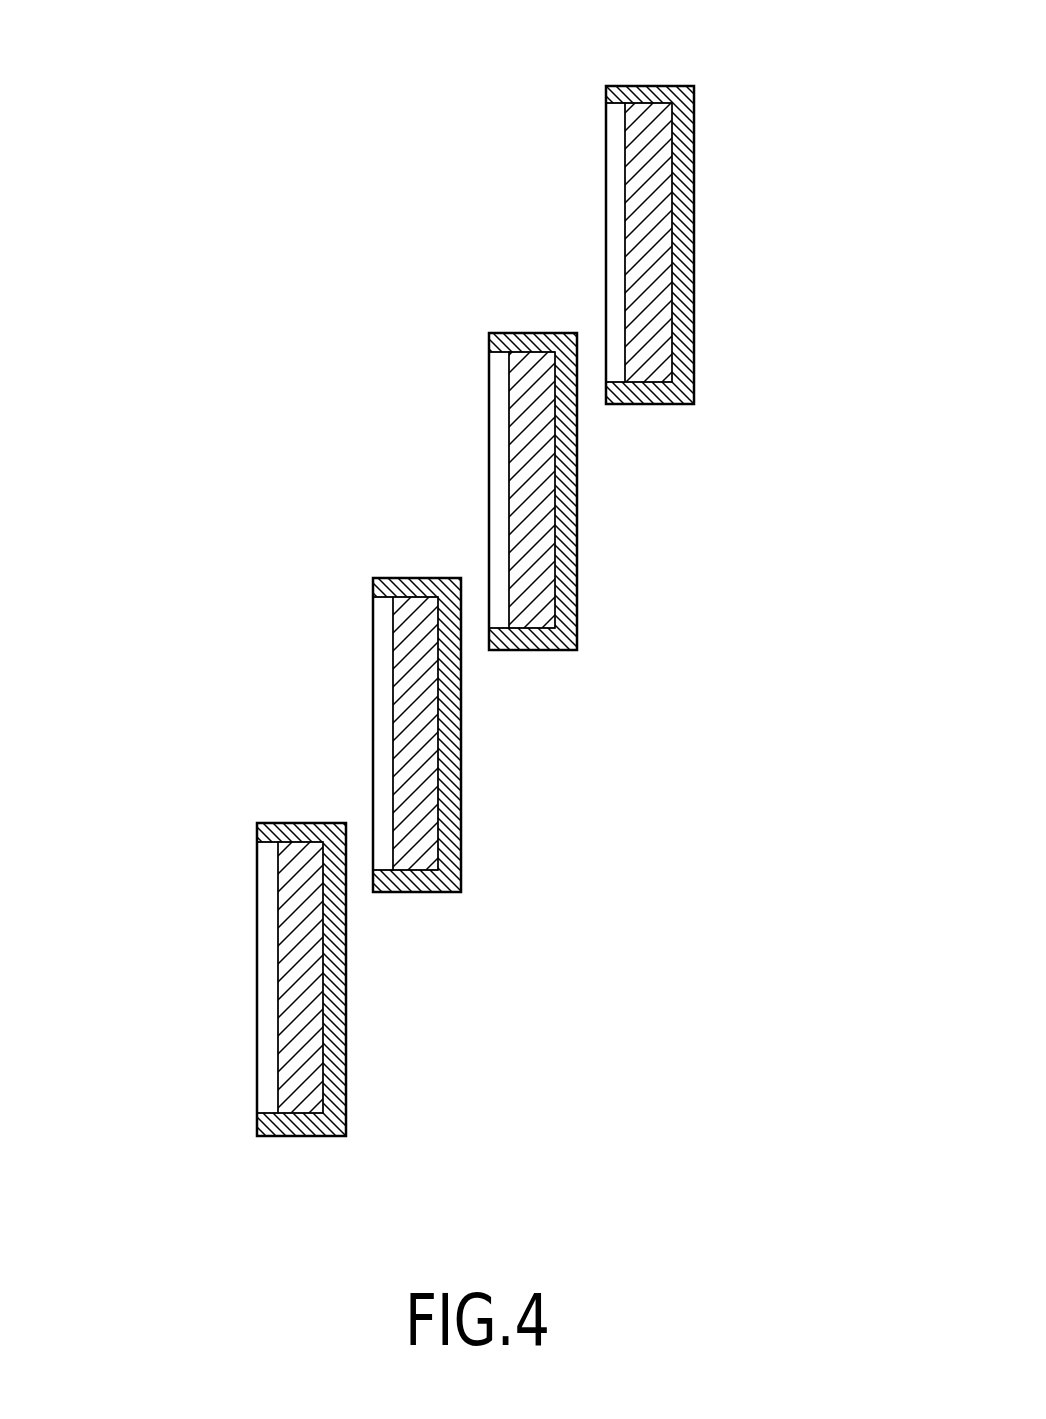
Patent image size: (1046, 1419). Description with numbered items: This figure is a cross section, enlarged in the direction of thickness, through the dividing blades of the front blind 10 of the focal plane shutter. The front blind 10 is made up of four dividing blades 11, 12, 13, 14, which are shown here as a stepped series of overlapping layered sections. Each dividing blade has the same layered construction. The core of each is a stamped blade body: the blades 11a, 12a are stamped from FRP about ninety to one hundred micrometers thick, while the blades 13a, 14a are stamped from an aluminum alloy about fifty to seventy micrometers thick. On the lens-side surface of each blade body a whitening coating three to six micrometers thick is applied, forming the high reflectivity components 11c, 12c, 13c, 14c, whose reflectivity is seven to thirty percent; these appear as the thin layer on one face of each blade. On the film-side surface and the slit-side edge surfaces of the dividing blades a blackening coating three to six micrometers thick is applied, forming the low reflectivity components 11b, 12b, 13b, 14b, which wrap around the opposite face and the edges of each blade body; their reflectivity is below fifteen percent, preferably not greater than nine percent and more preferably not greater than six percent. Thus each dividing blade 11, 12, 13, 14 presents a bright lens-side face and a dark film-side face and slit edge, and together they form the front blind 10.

The front blind 10 is at (296, 384).
The dividing blade 11 is at (736, 246).
The blade 11a is at (627, 146).
The low reflectivity component 11b is at (605, 93).
The high reflectivity component 11c is at (620, 250).
The dividing blade 12 is at (619, 493).
The blade 12a is at (513, 397).
The low reflectivity component 12b is at (489, 340).
The high reflectivity component 12c is at (502, 500).
The dividing blade 13 is at (503, 736).
The blade 13a is at (397, 640).
The low reflectivity component 13b is at (373, 585).
The high reflectivity component 13c is at (386, 745).
The dividing blade 14 is at (386, 983).
The blade 14a is at (282, 881).
The low reflectivity component 14b is at (257, 830).
The high reflectivity component 14c is at (270, 982).